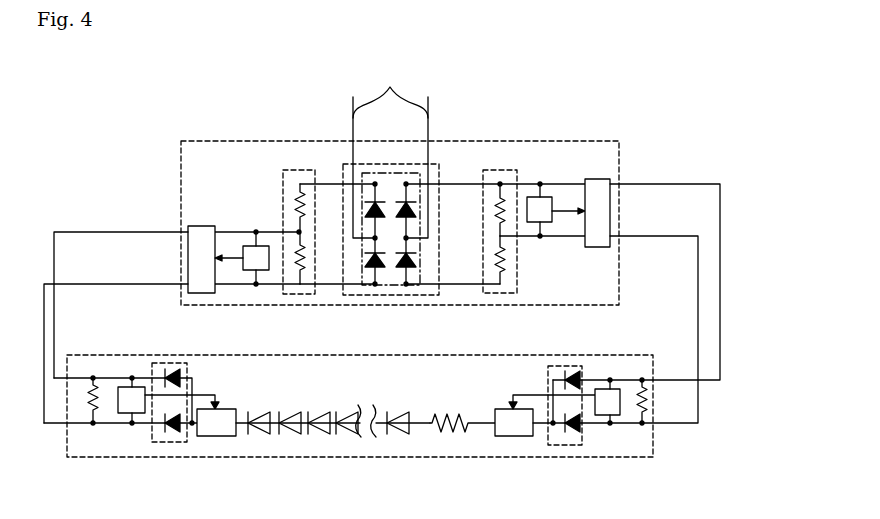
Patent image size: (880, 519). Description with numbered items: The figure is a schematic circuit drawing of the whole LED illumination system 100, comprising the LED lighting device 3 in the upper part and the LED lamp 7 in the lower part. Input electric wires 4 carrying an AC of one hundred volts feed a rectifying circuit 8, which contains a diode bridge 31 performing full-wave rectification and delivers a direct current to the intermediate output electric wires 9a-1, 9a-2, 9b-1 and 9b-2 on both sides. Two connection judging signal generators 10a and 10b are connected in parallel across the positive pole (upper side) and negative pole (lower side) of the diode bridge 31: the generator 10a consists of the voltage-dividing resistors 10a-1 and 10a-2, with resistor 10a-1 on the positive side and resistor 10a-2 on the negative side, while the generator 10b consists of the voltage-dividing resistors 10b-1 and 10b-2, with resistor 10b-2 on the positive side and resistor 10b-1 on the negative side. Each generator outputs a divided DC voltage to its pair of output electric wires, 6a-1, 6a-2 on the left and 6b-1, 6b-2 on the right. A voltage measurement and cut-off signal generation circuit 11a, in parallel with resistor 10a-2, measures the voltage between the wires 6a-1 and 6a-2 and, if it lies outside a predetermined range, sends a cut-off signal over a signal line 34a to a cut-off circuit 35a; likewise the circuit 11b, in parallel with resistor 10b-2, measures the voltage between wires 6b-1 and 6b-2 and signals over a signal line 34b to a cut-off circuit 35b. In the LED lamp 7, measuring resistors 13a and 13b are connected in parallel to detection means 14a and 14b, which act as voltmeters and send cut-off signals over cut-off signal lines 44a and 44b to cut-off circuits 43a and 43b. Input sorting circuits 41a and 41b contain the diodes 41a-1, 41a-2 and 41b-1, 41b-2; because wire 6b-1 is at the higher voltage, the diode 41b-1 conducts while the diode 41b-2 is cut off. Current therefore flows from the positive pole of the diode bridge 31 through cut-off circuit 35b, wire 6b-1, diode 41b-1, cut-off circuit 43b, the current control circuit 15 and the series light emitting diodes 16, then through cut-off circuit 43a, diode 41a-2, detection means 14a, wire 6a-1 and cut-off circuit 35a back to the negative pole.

The LED illumination system 100 is at (614, 102).
The LED lighting device 3 is at (243, 141).
The input electric wires 4 is at (390, 153).
The LED lamp 7 is at (136, 355).
The rectifying circuit 8 is at (388, 164).
The diode bridge 31 is at (410, 296).
The intermediate output electric wire 9a-1 is at (332, 184).
The intermediate output electric wire 9a-2 is at (328, 284).
The intermediate output electric wire 9b-1 is at (465, 184).
The intermediate output electric wire 9b-2 is at (445, 284).
The connection judging signal generator 10a is at (302, 170).
The voltage-dividing resistor 10a-1 is at (300, 198).
The voltage-dividing resistor 10a-2 is at (306, 270).
The connection judging signal generator 10b is at (500, 170).
The voltage-dividing resistor 10b-1 is at (507, 262).
The voltage-dividing resistor 10b-2 is at (495, 215).
The voltage measurement and cut-off signal generation circuit 11a is at (257, 276).
The voltage measurement and cut-off signal generation circuit 11b is at (540, 197).
The signal line 34a is at (232, 258).
The signal line 34b is at (568, 211).
The cut-off circuit 35a is at (195, 226).
The cut-off circuit 35b is at (598, 179).
The output electric wire 6a-1 is at (133, 284).
The output electric wire 6a-2 is at (122, 232).
The output electric wire 6b-1 is at (665, 184).
The output electric wire 6b-2 is at (662, 237).
The measuring resistor 13a is at (92, 383).
The measuring resistor 13b is at (642, 388).
The detection means 14a is at (125, 413).
The detection means 14b is at (610, 416).
The current control circuit 15 is at (448, 423).
The light emitting diodes 16 is at (407, 398).
The input sorting circuit 41a is at (158, 442).
The diode 41a-1 is at (170, 372).
The diode 41a-2 is at (176, 430).
The input sorting circuit 41b is at (576, 445).
The diode 41b-1 is at (567, 376).
The diode 41b-2 is at (570, 430).
The cut-off circuit 43a is at (218, 436).
The cut-off circuit 43b is at (500, 436).
The cut-off signal line 44a is at (205, 395).
The cut-off signal line 44b is at (532, 395).